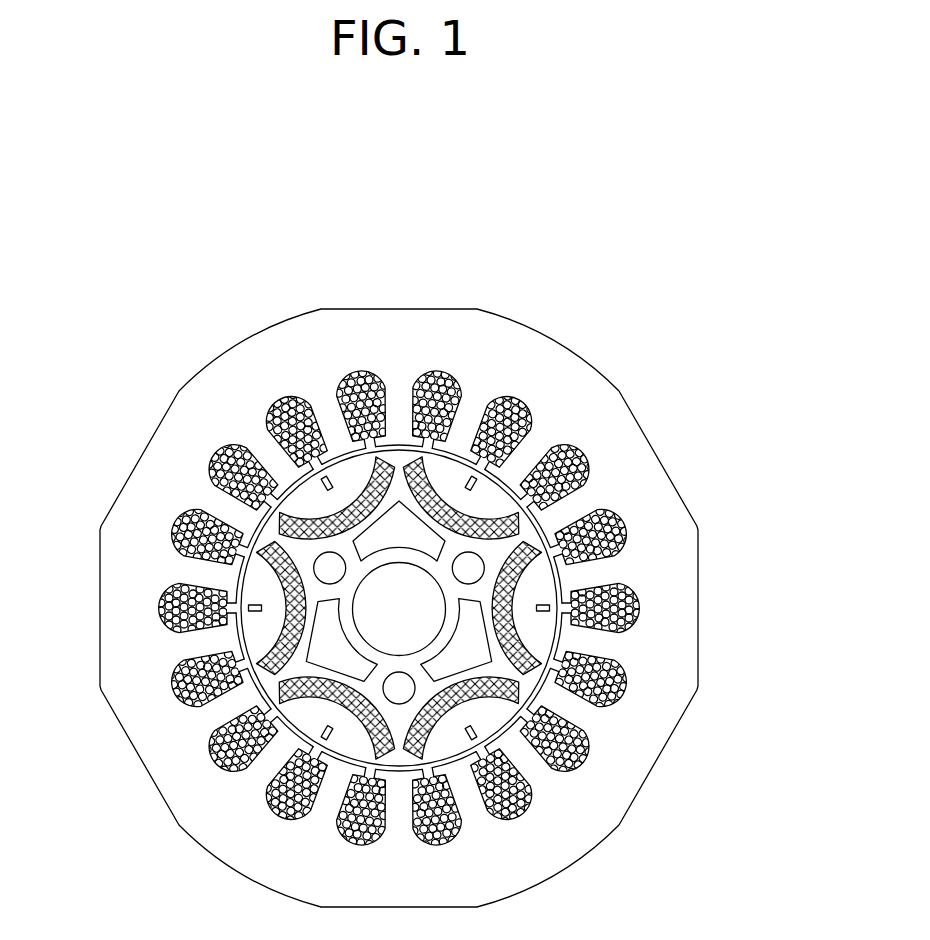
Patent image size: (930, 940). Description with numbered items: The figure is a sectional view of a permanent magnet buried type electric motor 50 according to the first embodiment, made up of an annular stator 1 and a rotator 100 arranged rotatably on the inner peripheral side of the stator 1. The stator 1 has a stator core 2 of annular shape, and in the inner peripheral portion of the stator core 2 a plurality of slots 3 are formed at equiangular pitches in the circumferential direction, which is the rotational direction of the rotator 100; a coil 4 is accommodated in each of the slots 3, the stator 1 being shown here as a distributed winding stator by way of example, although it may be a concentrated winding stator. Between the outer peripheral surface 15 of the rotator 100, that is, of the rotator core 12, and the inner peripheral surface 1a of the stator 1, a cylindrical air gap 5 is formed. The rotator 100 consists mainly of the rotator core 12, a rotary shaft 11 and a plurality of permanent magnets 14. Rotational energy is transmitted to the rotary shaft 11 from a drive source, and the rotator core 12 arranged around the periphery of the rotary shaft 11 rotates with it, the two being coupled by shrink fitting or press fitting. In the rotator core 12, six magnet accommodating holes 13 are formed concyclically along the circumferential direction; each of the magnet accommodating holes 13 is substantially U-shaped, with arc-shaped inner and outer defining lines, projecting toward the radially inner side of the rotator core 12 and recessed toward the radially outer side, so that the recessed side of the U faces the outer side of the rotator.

The permanent magnet buried type electric motor 50 is at (71, 233).
The stator 1 is at (493, 327).
The inner peripheral surface 1a is at (553, 576).
The stator core 2 is at (553, 367).
The slots 3 is at (552, 443).
The coil 4 is at (592, 458).
The air gap 5 is at (565, 630).
The rotary shaft 11 is at (393, 607).
The rotator core 12 is at (340, 478).
The magnet accommodating holes 13 is at (322, 500).
The permanent magnets 14 is at (410, 462).
The outer peripheral surface 15 is at (552, 650).
The rotator 100 is at (490, 721).